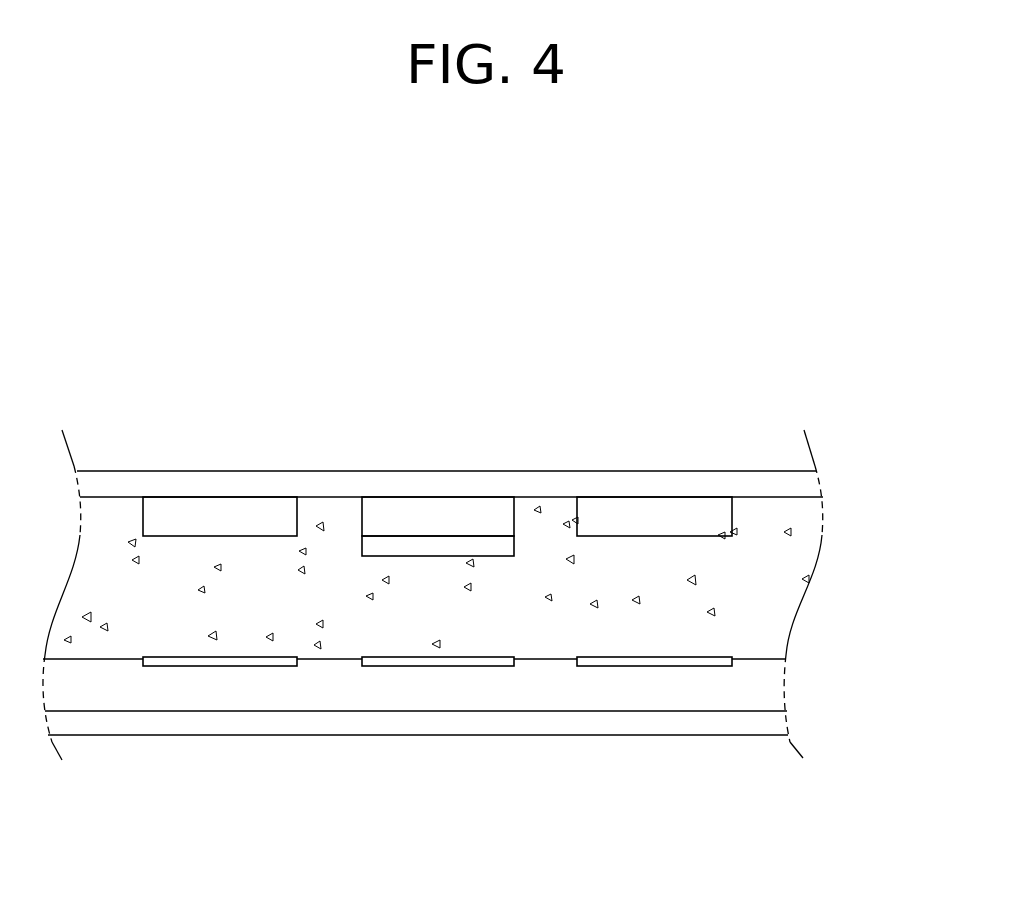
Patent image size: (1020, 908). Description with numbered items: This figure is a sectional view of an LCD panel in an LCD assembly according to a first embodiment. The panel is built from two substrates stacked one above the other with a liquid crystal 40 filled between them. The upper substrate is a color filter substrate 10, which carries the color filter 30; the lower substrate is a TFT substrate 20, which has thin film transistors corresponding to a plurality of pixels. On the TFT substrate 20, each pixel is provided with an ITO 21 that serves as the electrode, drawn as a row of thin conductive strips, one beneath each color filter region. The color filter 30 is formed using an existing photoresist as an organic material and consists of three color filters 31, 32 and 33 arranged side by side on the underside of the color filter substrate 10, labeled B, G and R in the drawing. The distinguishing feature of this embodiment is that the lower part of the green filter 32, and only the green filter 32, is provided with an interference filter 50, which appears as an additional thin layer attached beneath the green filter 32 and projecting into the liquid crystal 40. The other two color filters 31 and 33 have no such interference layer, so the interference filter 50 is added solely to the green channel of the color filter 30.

The color filter substrate 10 is at (812, 483).
The TFT substrate 20 is at (780, 720).
The ITO 21 is at (732, 658).
The color filter 30 is at (437, 434).
The color filter 31 is at (654, 457).
The green filter 32 is at (487, 503).
The color filter 33 is at (248, 500).
The liquid crystal 40 is at (788, 594).
The interference filter 50 is at (470, 554).